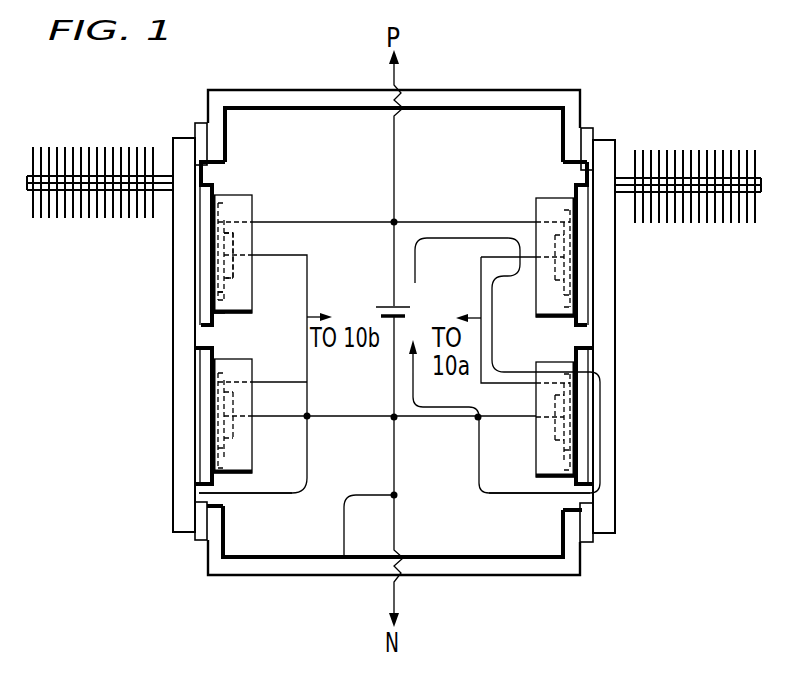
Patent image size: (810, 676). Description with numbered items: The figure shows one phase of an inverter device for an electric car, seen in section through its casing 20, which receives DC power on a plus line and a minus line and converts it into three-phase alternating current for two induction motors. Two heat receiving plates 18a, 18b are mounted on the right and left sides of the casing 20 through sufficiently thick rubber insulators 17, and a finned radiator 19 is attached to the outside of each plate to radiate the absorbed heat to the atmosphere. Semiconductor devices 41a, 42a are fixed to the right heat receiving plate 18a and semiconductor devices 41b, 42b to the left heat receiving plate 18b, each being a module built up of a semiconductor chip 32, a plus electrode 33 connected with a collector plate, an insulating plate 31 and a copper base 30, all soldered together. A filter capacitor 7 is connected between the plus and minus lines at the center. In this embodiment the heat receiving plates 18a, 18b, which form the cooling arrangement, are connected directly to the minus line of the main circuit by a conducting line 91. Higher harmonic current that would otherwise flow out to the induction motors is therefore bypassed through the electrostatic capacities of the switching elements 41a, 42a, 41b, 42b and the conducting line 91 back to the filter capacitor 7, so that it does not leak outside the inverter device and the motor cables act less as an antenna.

The filter capacitor 7 is at (400, 316).
The insulator 17 is at (198, 124).
The heat receiving plate 18a is at (615, 337).
The heat receiving plate 18b is at (173, 337).
The radiator 19 is at (84, 146).
The inverter device casing 20 is at (481, 90).
The copper base 30 is at (216, 182).
The insulating plate 31 is at (220, 305).
The semiconductor chip 32 is at (236, 240).
The plus electrode 33 is at (226, 295).
The semiconductor device 41a is at (536, 204).
The semiconductor device 41b is at (252, 196).
The semiconductor device 42a is at (540, 362).
The semiconductor device 42b is at (253, 396).
The conducting line 91 is at (257, 495).